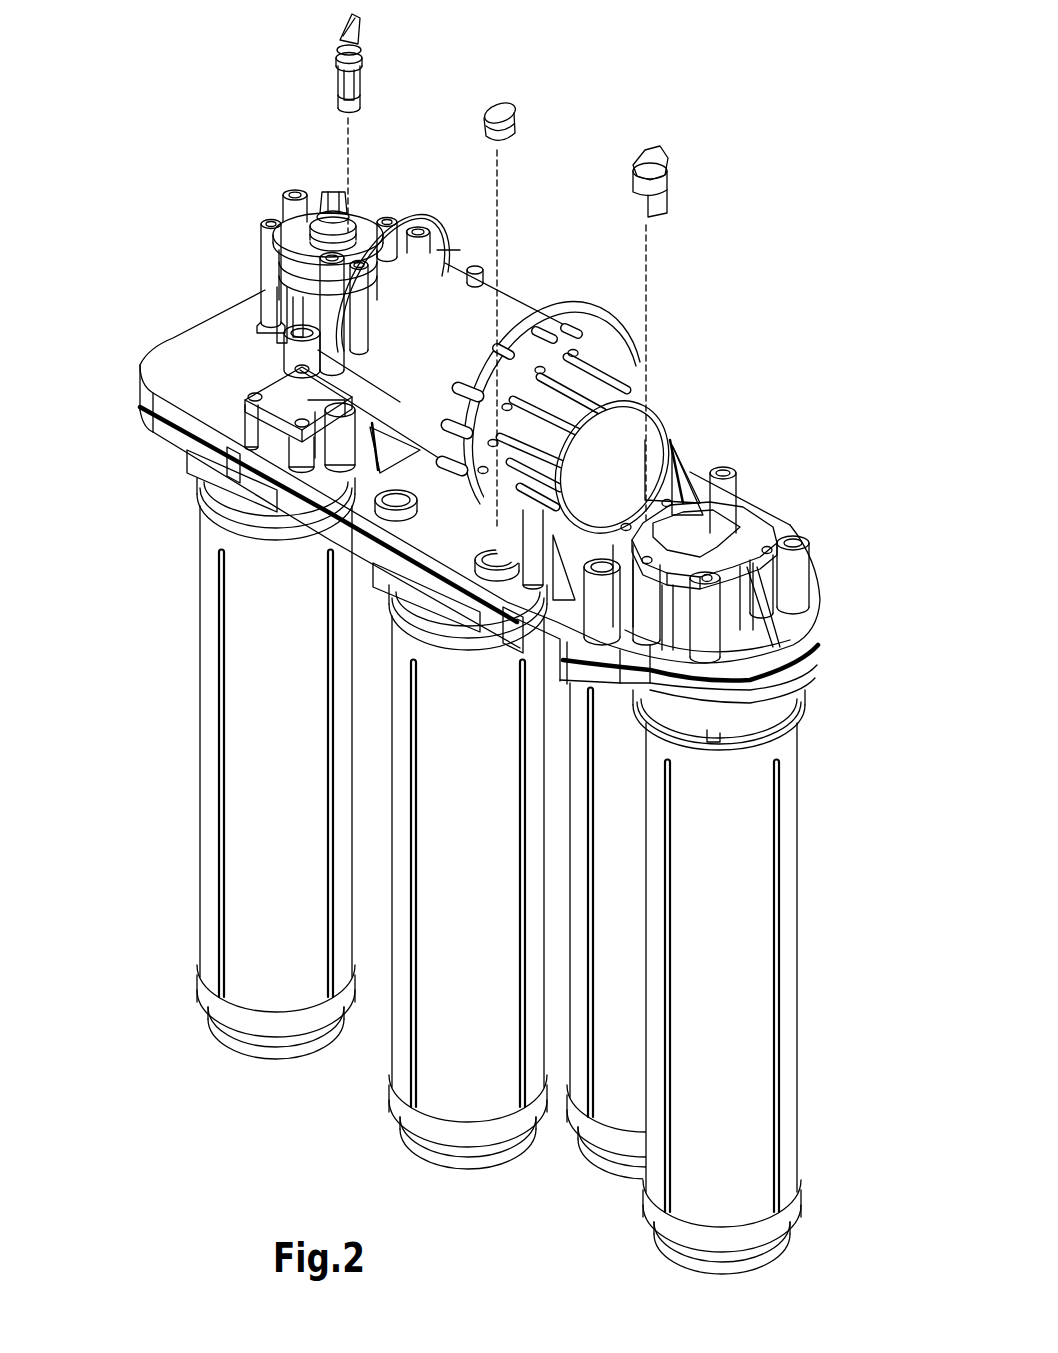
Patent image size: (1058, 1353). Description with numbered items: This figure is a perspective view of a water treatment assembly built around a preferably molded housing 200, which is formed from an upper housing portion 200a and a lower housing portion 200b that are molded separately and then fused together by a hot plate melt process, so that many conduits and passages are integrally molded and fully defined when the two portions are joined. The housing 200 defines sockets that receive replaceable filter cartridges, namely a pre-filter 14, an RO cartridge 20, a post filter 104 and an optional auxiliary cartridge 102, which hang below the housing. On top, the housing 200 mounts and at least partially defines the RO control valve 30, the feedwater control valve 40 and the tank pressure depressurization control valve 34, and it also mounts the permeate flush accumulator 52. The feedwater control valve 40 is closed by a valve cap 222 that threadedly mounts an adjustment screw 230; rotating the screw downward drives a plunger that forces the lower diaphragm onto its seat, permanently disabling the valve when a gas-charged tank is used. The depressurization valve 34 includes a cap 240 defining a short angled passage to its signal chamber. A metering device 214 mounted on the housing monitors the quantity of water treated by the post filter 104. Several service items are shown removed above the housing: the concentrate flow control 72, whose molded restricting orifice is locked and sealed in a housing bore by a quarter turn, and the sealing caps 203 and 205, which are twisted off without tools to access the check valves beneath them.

The pre-filter 14 is at (280, 861).
The RO cartridge 20 is at (473, 917).
The RO control valve 30 is at (228, 405).
The tank pressure depressurization control valve 34 is at (449, 236).
The feedwater control valve 40 is at (318, 241).
The permeate flush accumulator 52 is at (501, 403).
The flow control 72 is at (365, 38).
The auxiliary cartridge 102 is at (612, 1093).
The post filter 104 is at (737, 1035).
The housing 200 is at (457, 470).
The upper housing portion 200a is at (243, 380).
The lower housing portion 200b is at (188, 444).
The sealing cap 203 is at (516, 112).
The cap 205 is at (664, 165).
The metering device 214 is at (763, 518).
The valve cap 222 is at (305, 237).
The adjustment screw 230 is at (333, 208).
The cap 240 is at (463, 262).